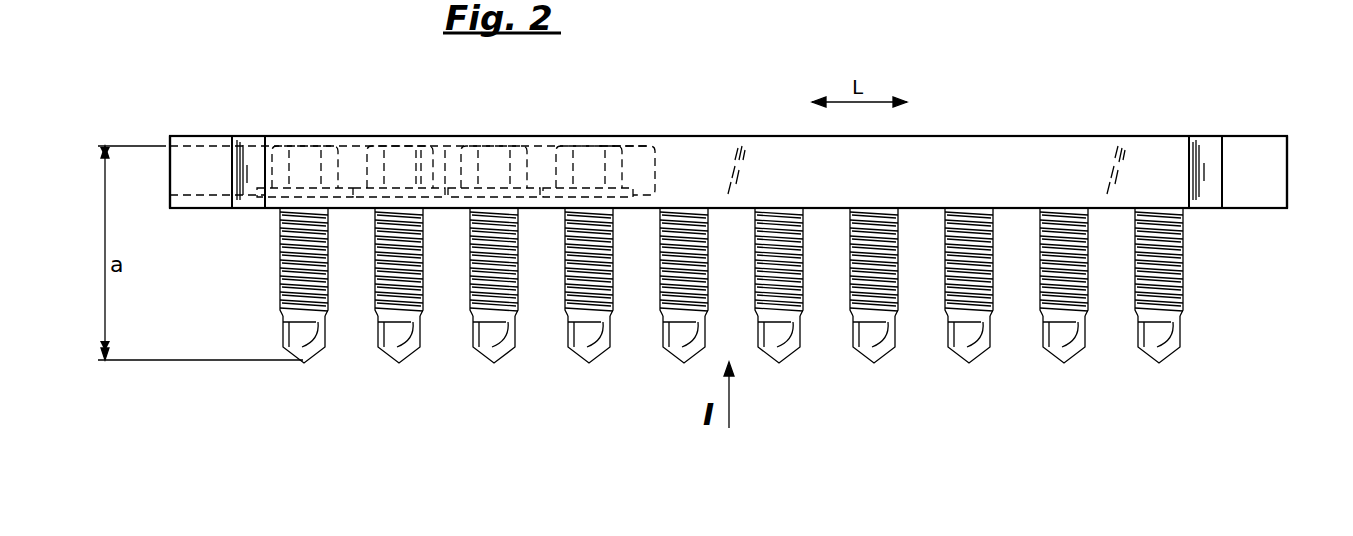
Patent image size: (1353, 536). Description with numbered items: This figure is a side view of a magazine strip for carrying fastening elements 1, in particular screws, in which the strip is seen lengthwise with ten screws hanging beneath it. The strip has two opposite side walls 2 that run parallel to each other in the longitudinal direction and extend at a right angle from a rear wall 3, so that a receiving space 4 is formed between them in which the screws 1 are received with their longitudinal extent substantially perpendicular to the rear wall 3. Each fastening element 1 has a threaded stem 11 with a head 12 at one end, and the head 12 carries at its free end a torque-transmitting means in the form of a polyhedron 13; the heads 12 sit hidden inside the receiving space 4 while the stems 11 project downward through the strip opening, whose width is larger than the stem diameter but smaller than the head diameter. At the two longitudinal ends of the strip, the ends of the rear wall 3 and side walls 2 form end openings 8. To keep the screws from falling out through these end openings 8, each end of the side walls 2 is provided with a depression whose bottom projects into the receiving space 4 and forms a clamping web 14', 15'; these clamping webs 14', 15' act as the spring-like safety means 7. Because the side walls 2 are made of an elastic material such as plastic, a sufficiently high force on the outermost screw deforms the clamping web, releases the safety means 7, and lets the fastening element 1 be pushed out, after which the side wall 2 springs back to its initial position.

The fastening element 1 is at (428, 333).
The side wall 2 is at (968, 158).
The rear wall 3 is at (1062, 134).
The receiving space 4 is at (660, 172).
The safety means 7 is at (237, 224).
The end opening 8 is at (168, 168).
The stem 11 is at (374, 298).
The head 12 is at (403, 170).
The polyhedron 13 is at (456, 168).
The clamping web 14' is at (258, 139).
The clamping web 15' is at (1210, 138).